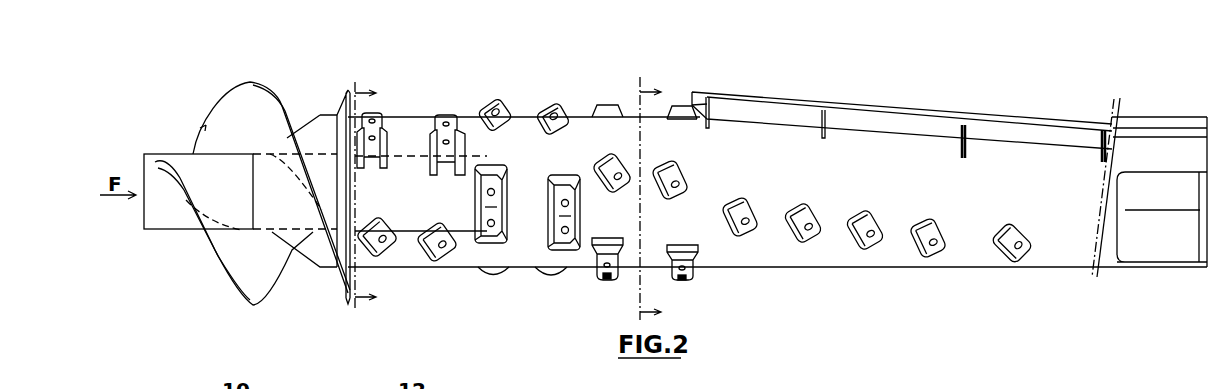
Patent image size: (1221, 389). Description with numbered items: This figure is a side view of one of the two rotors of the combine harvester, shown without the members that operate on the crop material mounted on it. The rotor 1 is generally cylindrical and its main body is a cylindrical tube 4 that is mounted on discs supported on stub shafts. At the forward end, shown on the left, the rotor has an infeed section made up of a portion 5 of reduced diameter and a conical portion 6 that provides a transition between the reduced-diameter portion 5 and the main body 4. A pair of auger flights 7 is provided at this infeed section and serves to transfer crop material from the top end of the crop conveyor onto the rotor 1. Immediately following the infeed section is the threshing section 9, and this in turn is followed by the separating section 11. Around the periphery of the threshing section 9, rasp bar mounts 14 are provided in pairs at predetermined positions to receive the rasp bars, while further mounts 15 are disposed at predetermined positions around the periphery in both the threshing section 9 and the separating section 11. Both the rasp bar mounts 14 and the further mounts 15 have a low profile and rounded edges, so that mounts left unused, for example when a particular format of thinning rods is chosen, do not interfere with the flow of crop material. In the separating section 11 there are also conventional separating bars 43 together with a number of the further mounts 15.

The rotor 1 is at (727, 70).
The cylindrical tube 4 is at (1050, 282).
The portion of reduced diameter 5 is at (170, 250).
The conical portion 6 is at (316, 258).
The auger flights 7 is at (176, 180).
The threshing section 9 is at (547, 91).
The separating section 11 is at (934, 98).
The rasp bar mounts 14 is at (428, 160).
The further mounts 15 is at (427, 225).
The separating bars 43 is at (845, 108).